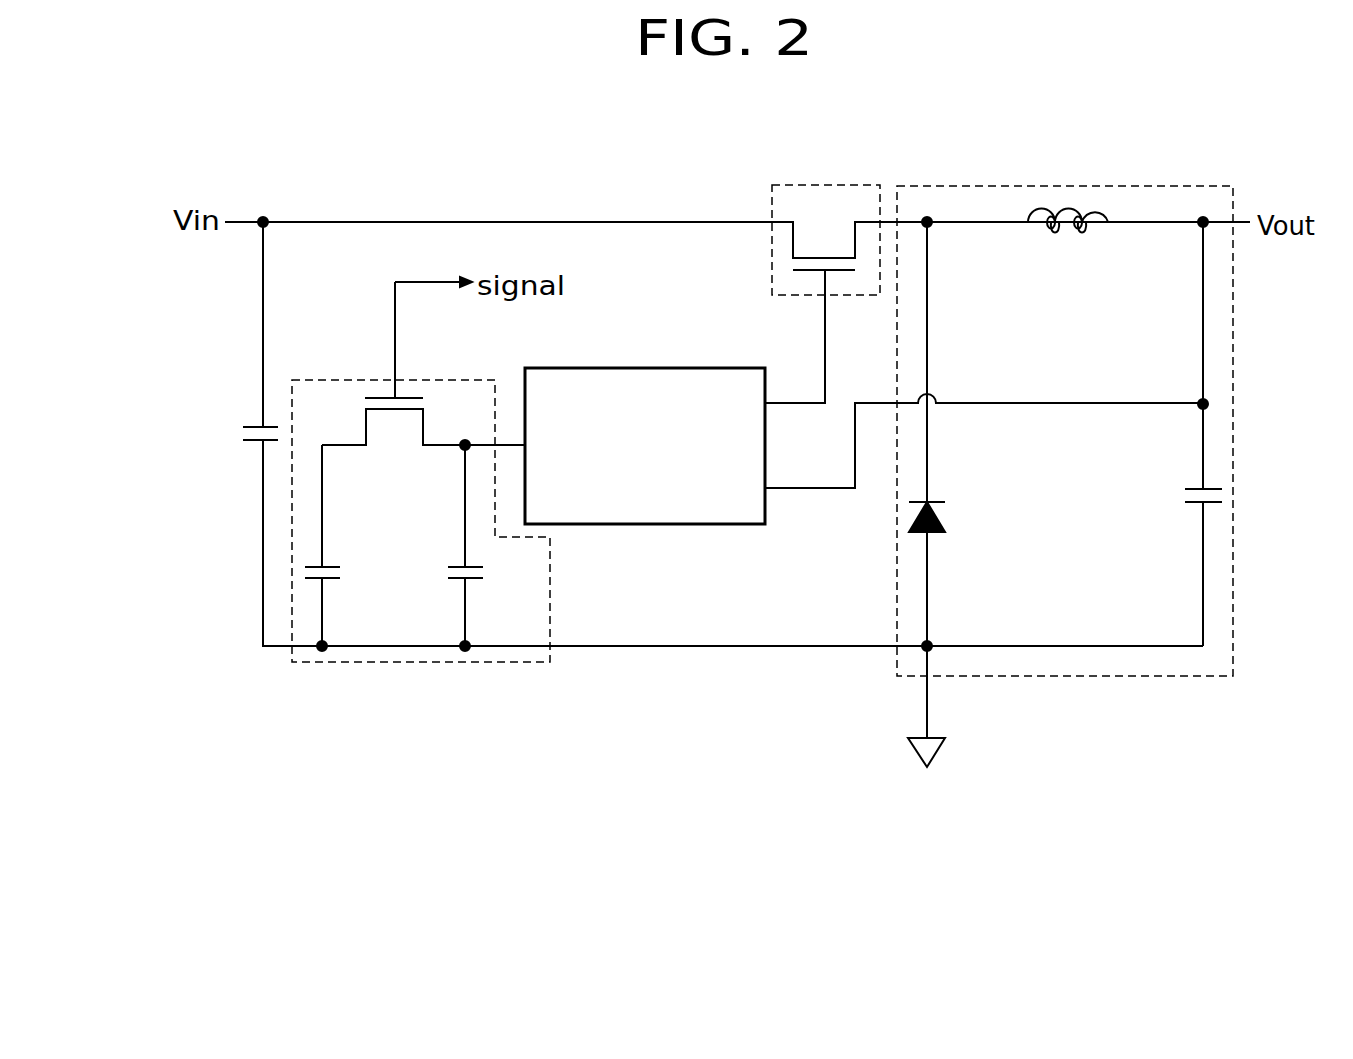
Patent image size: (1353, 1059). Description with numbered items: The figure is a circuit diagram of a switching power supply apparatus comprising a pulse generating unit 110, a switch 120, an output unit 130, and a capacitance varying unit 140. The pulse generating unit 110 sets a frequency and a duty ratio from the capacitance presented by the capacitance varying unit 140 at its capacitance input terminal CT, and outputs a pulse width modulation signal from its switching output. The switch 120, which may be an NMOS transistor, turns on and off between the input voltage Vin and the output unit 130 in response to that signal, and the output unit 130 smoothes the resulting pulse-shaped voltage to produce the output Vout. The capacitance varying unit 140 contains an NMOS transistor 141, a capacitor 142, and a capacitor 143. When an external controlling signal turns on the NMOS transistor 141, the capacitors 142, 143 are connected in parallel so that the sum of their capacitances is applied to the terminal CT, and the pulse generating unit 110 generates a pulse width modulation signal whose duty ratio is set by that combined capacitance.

The pulse generating unit 110 is at (725, 524).
The switch 120 is at (772, 200).
The output unit 130 is at (1070, 676).
The capacitance varying unit 140 is at (487, 663).
The NMOS transistor 141 is at (365, 402).
The capacitor 142 is at (305, 572).
The capacitor 143 is at (453, 572).